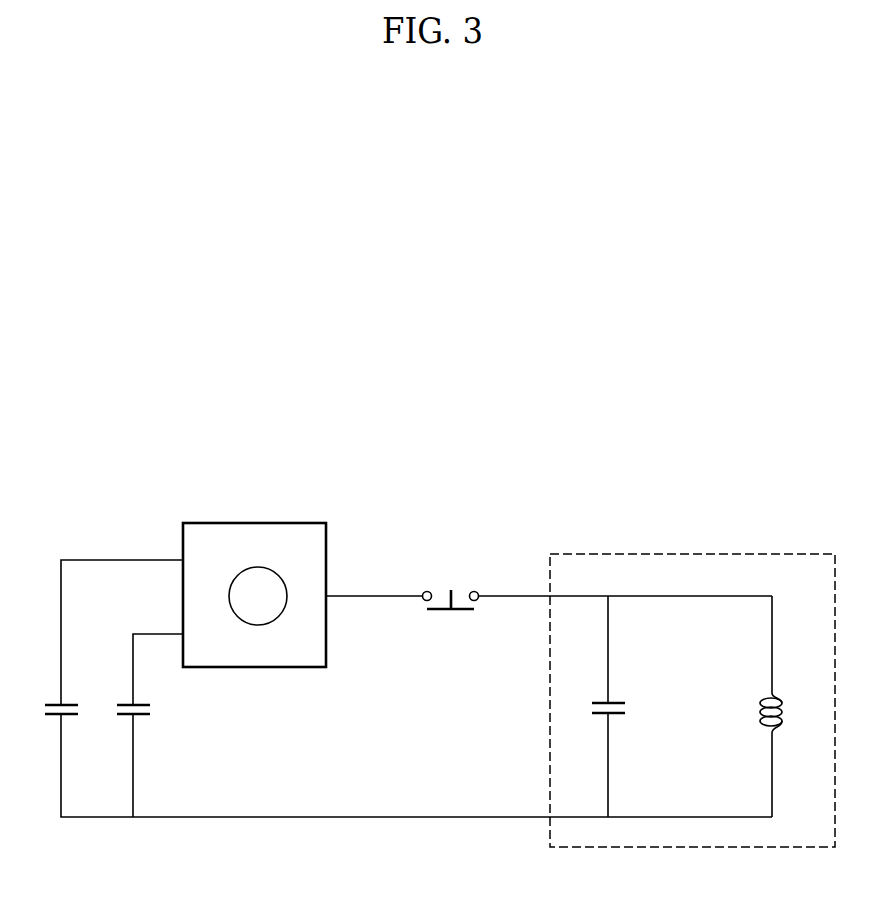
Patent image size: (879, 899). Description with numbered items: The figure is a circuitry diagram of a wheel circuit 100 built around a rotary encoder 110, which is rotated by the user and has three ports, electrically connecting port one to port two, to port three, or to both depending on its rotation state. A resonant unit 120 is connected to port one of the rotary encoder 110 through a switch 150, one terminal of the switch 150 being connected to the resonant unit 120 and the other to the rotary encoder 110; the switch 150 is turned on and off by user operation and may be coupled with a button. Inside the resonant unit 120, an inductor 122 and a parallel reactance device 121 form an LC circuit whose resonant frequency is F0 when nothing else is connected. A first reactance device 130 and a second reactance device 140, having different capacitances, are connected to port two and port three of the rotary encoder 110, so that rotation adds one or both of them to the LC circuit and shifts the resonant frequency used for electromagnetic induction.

The wheel circuit 100 is at (618, 490).
The rotary encoder 110 is at (277, 523).
The resonant unit 120 is at (795, 554).
The reactance device 121 is at (615, 700).
The inductor 122 is at (776, 690).
The reactance device 130 is at (53, 700).
The reactance device 140 is at (128, 700).
The switch 150 is at (453, 584).